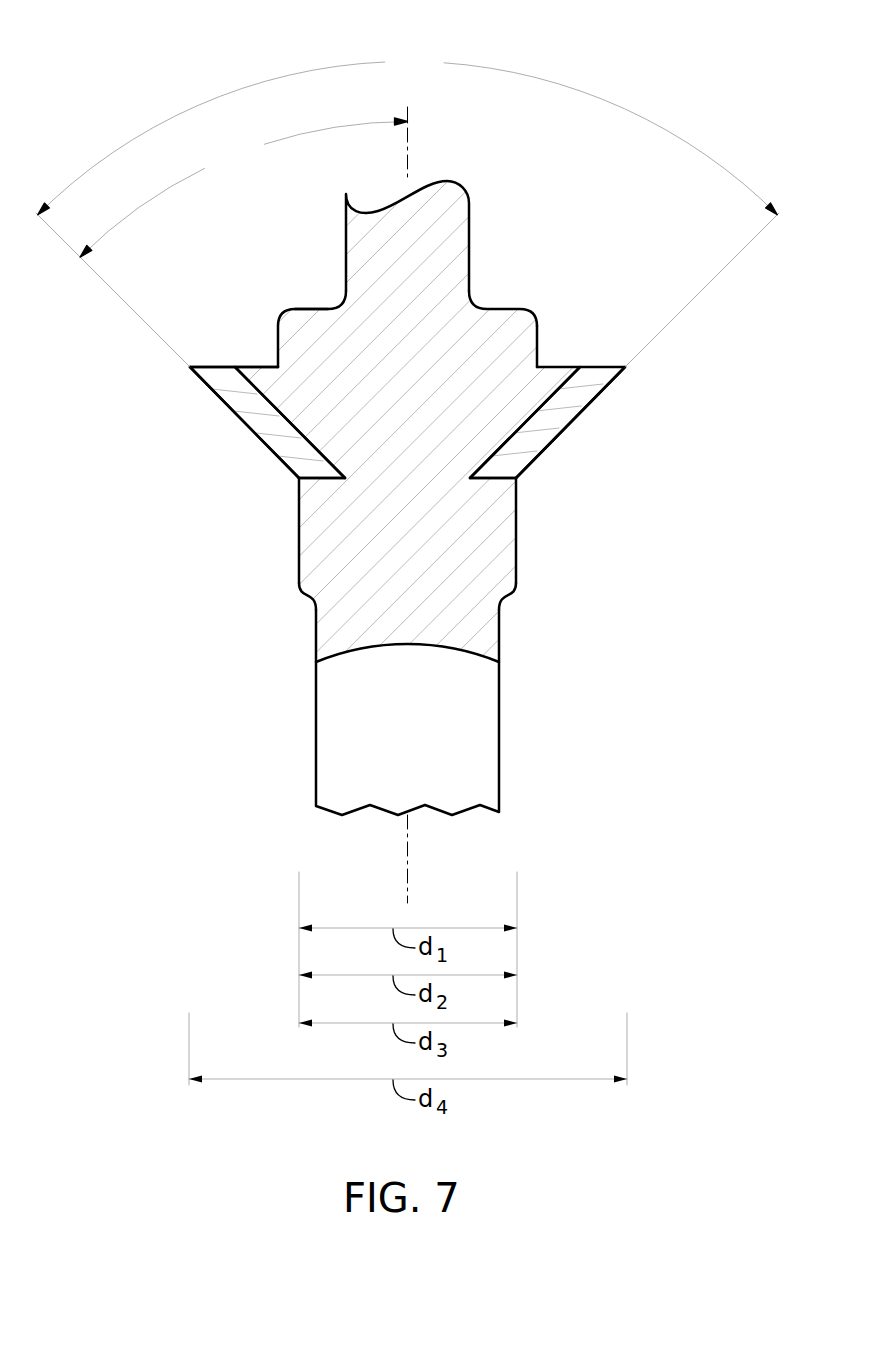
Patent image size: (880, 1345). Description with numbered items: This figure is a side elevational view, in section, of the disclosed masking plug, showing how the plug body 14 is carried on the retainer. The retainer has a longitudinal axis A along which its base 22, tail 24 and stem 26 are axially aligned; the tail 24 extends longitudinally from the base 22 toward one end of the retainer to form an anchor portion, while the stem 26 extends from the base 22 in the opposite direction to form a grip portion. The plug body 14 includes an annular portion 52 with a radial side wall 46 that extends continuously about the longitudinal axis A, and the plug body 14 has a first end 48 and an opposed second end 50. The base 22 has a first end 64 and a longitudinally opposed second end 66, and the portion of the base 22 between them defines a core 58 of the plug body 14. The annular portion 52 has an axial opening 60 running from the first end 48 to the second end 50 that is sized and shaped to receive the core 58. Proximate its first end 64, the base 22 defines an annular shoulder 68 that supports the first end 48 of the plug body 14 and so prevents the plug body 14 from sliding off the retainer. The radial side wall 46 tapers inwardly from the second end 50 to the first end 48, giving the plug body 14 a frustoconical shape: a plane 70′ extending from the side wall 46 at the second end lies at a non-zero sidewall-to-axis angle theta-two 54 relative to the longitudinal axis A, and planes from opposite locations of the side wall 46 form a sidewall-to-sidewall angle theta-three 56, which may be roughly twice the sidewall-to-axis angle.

The plug body 14 is at (615, 377).
The base 22 is at (533, 313).
The tail 24 is at (499, 688).
The stem 26 is at (469, 227).
The radial side wall 46 is at (265, 443).
The first end 48 is at (264, 496).
The second end 50 is at (203, 332).
The annular portion 52 is at (198, 373).
The second non-zero angle Θ2 54 is at (193, 175).
The non-zero angle Θ3 56 is at (444, 64).
The core 58 is at (537, 345).
The axial opening 60 is at (286, 417).
The first end of the base 64 is at (545, 558).
The second end of the base 66 is at (294, 286).
The annular shoulder 68 is at (320, 479).
The plane 70′ is at (100, 277).
The longitudinal axis A is at (409, 113).